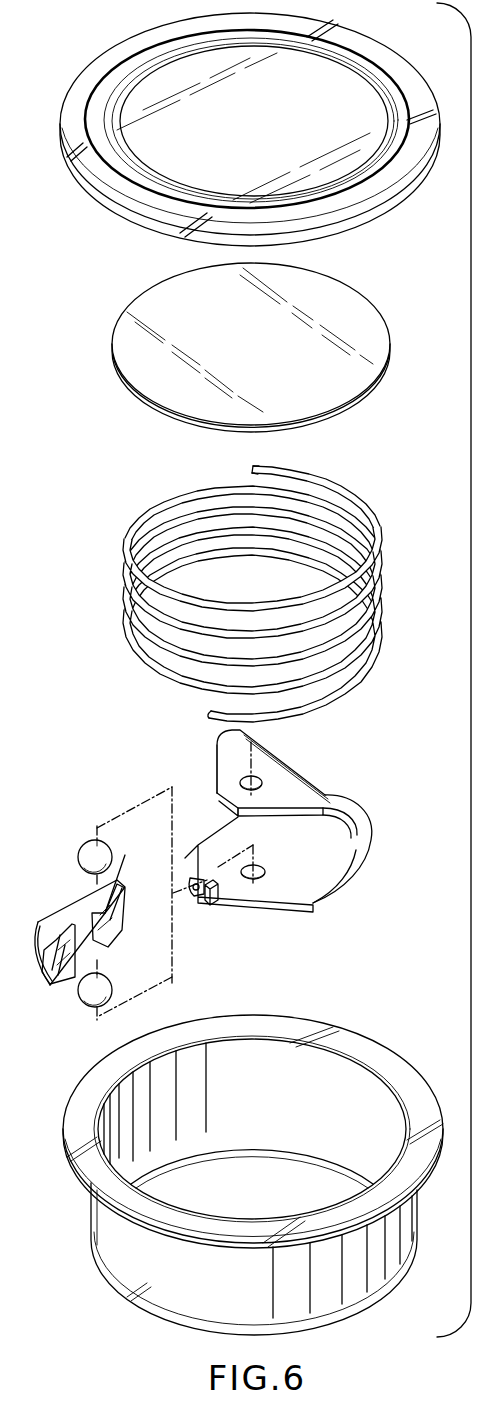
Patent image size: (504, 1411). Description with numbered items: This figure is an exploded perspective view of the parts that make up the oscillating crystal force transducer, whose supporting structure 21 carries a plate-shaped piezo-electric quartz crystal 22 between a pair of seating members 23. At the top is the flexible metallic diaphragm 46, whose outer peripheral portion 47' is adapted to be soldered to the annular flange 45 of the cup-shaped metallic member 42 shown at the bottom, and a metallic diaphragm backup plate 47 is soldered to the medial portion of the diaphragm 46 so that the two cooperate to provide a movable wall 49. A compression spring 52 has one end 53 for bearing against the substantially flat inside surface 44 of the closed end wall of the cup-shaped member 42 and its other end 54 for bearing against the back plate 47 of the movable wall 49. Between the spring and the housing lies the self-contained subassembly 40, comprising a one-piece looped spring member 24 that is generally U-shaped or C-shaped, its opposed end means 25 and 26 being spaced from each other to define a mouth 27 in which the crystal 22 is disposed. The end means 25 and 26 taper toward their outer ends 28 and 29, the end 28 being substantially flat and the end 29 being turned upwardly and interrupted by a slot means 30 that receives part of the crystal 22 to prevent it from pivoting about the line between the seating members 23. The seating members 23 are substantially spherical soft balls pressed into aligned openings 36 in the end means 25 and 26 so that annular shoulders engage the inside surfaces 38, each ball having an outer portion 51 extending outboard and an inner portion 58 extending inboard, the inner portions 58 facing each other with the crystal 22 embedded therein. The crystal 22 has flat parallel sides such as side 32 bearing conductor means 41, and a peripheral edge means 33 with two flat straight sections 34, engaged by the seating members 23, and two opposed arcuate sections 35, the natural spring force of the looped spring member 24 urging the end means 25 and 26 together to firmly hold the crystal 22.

The support means 21 is at (95, 1250).
The piezo-electric quartz crystal 22 is at (82, 890).
The seating members 23 is at (88, 855).
The looped spring member 24 is at (300, 788).
The end means 25 is at (228, 793).
The end means 26 is at (225, 910).
The mouth 27 is at (212, 815).
The outer end 28 is at (220, 800).
The outer end 29 is at (190, 915).
The slot means 30 is at (210, 875).
The flat parallel side 32 is at (92, 948).
The peripheral edge means 33 is at (127, 913).
The flat straight sections 34 is at (78, 902).
The arcuate sections 35 is at (120, 895).
The openings 36 is at (263, 782).
The inside surfaces 38 is at (318, 883).
The self-contained subassembly 40 is at (370, 818).
The conductor means 41 is at (107, 887).
The cup-shaped metallic member 42 is at (148, 1285).
The inside surface means 44 is at (265, 1170).
The annular flange 45 is at (363, 1048).
The flexible metallic diaphragm 46 is at (167, 83).
The diaphragm backup plate 47 is at (257, 340).
The outer peripheral portion 47' is at (235, 129).
The movable wall 49 is at (300, 92).
The outer portion 51 is at (95, 843).
The compression spring 52 is at (367, 603).
The end 53 is at (211, 712).
The end 54 is at (287, 470).
The inner portion 58 is at (88, 878).